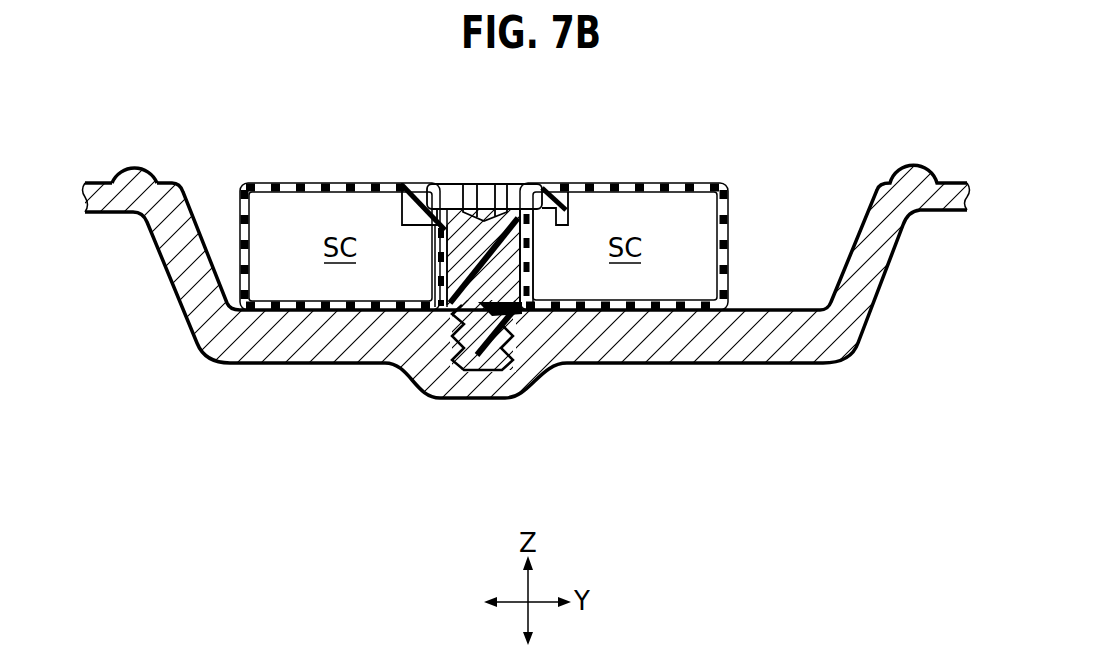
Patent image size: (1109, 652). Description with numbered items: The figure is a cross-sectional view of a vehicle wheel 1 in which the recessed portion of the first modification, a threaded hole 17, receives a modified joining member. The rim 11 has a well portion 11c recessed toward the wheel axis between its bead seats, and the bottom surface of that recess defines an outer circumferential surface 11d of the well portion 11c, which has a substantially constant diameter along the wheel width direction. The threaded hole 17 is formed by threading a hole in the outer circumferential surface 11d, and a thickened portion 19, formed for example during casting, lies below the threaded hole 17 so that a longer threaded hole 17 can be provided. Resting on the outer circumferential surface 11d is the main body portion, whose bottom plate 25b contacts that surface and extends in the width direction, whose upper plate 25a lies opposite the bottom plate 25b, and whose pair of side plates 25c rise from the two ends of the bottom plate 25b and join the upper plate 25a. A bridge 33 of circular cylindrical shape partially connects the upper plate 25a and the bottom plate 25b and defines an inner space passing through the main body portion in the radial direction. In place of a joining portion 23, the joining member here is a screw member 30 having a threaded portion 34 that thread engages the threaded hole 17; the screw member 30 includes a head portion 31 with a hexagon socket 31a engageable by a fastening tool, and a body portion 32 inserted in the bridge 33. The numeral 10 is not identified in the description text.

The vehicle wheel 1 is at (478, 257).
The housing 10 is at (692, 184).
The rim 11 is at (164, 180).
The well portion 11c is at (340, 359).
The outer circumferential surface 11d is at (327, 292).
The threaded hole 17 is at (478, 330).
The thickened portion 19 is at (500, 394).
The joining portion 23 is at (495, 342).
The upper plate 25a is at (311, 185).
The bottom plate 25b is at (650, 306).
The side plates 25c is at (248, 212).
The screw member 30 is at (445, 183).
The head portion 31 is at (530, 184).
The hexagon socket 31a is at (485, 184).
The body portion 32 is at (512, 254).
The bridge 33 is at (436, 255).
The threaded portion 34 is at (564, 366).